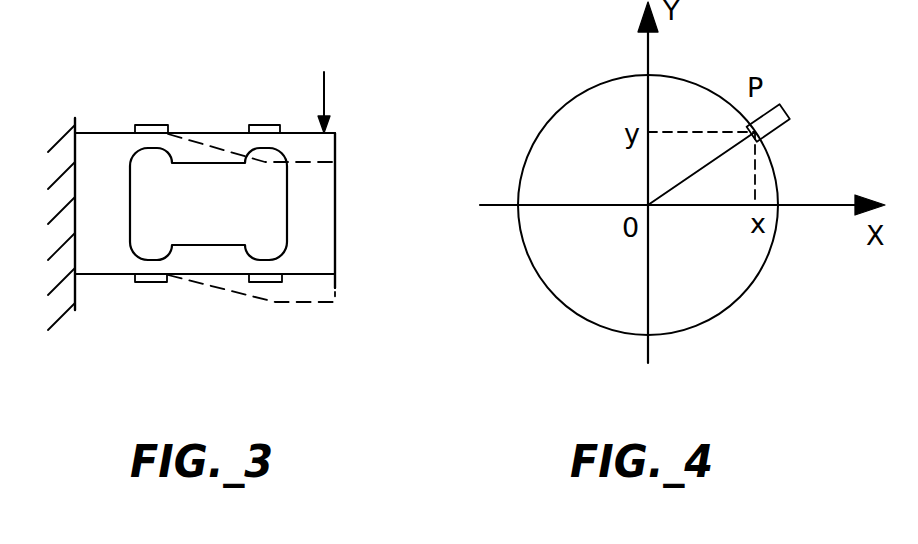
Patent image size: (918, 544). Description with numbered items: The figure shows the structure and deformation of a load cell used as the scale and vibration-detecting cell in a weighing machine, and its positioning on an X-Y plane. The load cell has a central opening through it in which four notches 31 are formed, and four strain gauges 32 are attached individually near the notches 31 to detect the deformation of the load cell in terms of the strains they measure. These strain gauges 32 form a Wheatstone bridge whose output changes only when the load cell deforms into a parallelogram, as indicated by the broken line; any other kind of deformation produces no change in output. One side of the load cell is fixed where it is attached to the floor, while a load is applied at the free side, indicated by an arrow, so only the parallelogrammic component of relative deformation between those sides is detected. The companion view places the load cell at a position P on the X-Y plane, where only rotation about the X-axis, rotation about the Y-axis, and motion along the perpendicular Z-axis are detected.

The notches 31 is at (150, 259).
The strain gauges 32 is at (152, 125).